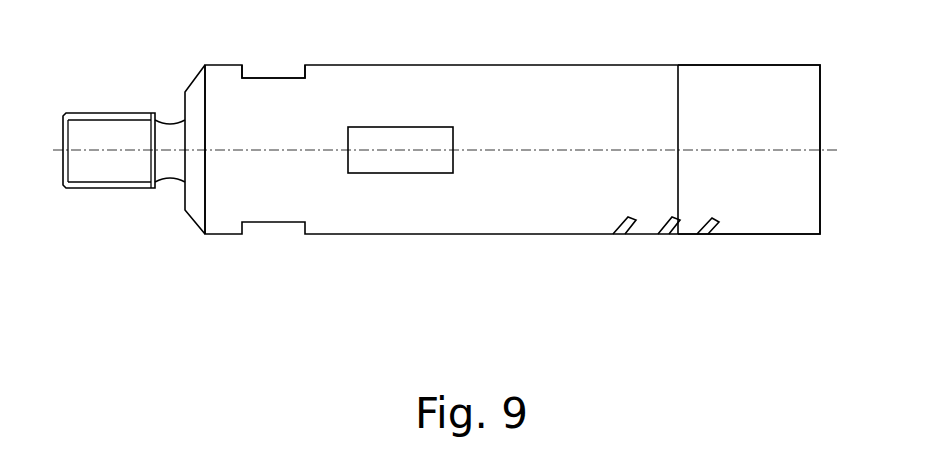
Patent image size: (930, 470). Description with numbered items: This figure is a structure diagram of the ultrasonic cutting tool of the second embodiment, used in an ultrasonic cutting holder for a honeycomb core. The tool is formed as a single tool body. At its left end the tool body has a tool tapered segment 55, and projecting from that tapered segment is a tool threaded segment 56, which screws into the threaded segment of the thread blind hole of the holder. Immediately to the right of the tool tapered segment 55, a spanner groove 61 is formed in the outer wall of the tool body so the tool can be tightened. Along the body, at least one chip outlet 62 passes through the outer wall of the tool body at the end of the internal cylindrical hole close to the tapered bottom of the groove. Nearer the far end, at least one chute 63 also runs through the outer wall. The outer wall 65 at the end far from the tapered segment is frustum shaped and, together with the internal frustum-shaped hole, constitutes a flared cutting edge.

The tool threaded segment 56 is at (112, 138).
The tool tapered segment 55 is at (197, 85).
The spanner groove 61 is at (273, 78).
The chip outlet 62 is at (417, 163).
The chute 63 is at (630, 237).
The outer wall 65 is at (757, 87).